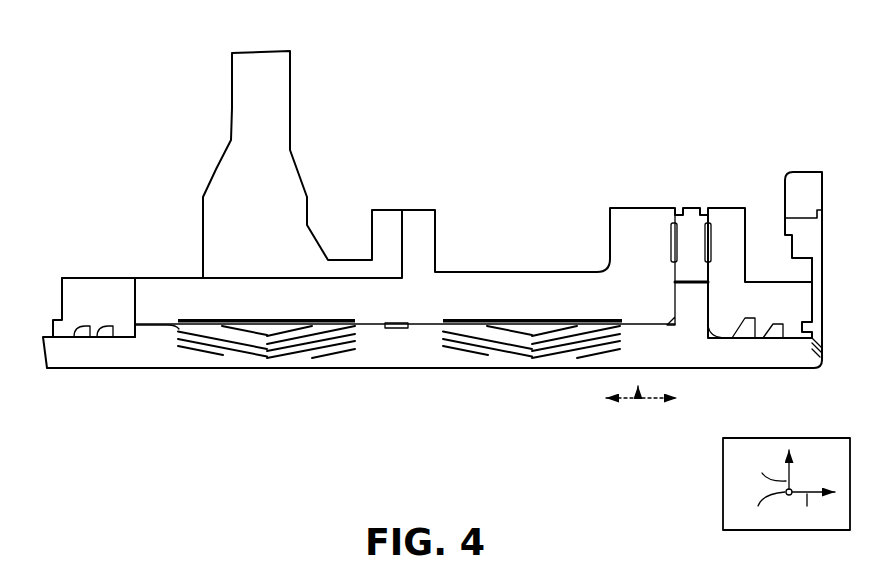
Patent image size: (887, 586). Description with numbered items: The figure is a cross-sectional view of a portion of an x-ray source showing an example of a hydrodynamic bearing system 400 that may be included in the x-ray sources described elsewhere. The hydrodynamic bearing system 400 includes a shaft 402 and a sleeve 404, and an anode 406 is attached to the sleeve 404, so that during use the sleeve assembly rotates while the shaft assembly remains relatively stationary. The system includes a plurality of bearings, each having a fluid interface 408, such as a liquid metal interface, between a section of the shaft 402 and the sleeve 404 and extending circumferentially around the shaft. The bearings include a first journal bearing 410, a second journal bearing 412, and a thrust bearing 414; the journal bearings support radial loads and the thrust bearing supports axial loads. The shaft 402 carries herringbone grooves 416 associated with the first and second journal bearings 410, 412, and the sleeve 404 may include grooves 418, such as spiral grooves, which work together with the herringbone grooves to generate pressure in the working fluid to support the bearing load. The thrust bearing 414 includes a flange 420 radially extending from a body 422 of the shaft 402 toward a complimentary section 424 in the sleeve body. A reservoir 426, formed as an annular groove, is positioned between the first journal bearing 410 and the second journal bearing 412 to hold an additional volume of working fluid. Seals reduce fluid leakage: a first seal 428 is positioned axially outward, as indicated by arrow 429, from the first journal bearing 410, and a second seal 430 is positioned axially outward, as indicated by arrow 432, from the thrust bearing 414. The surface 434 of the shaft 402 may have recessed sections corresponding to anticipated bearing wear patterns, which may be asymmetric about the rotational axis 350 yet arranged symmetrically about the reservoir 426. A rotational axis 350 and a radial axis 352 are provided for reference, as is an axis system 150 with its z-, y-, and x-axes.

The hydrodynamic bearing system 400 is at (126, 141).
The shaft 402 is at (134, 379).
The sleeve 404 is at (151, 270).
The anode 406 is at (243, 112).
The fluid interface 408 is at (167, 322).
The first journal bearing 410 is at (399, 381).
The second journal bearing 412 is at (522, 380).
The thrust bearing 414 is at (662, 287).
The herringbone grooves 416 is at (206, 357).
The grooves 418 is at (267, 319).
The flange 420 is at (695, 302).
The body 422 is at (702, 360).
The complimentary section 424 is at (687, 288).
The reservoir 426 is at (400, 328).
The first seal 428 is at (118, 344).
The arrow 429 is at (310, 300).
The second seal 430 is at (723, 345).
The arrow 432 is at (630, 296).
The surface 434 is at (367, 358).
The rotational axis 350 is at (606, 400).
The radial axis 352 is at (634, 394).
The axis system 150 is at (733, 440).